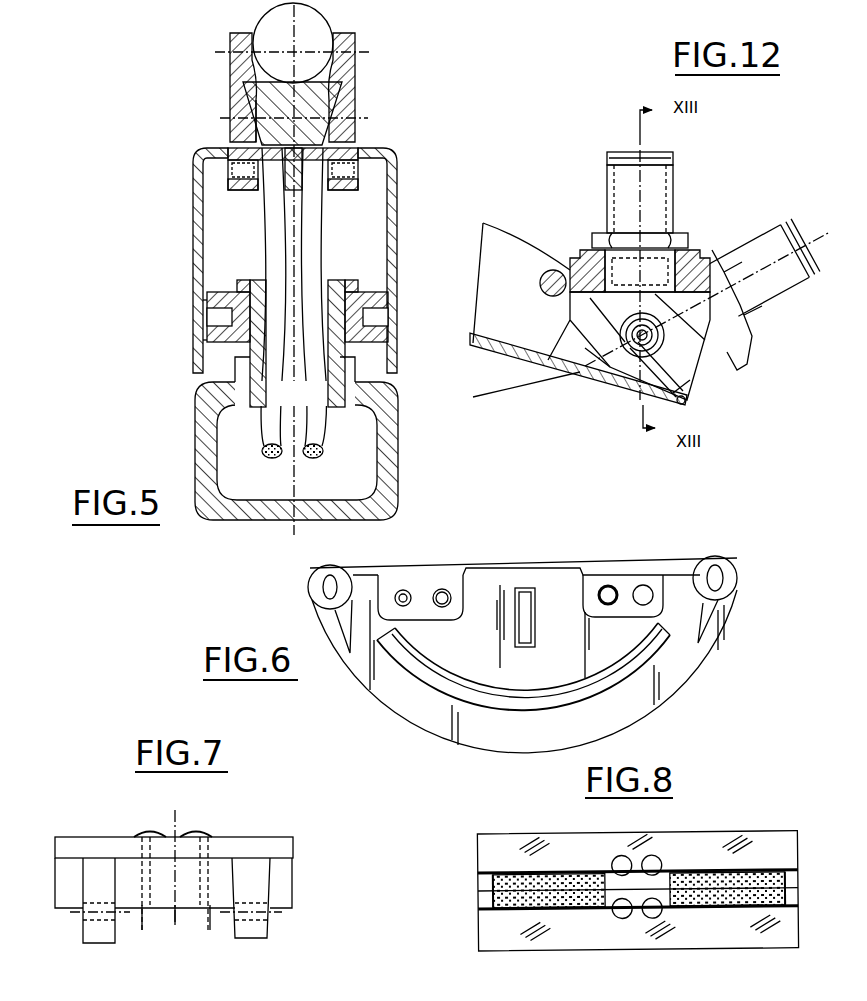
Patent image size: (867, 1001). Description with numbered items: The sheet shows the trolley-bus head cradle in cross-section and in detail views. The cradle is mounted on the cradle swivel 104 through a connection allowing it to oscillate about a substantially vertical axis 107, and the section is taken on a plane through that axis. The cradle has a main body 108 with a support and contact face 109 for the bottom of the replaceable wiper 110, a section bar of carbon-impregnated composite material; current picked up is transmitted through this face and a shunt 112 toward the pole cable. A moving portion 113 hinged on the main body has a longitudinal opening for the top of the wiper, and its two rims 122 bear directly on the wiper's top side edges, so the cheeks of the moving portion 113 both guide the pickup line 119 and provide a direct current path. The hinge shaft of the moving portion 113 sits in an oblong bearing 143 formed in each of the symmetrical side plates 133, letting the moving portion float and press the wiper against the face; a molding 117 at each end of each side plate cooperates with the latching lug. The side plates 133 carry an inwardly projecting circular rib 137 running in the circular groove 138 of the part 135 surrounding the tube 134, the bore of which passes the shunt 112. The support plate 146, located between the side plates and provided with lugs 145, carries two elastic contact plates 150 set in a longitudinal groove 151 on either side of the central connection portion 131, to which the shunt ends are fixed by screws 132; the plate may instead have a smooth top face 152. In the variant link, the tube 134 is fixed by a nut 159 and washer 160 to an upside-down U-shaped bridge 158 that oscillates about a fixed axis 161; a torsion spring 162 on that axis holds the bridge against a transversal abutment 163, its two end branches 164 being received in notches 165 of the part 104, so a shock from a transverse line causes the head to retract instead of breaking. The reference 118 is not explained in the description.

In FIG. 5, the cradle swivel 104 is at (393, 448).
In FIG. 12, the cradle swivel 104 is at (588, 388).
In FIG. 12, the substantially vertical axis 107 is at (643, 400).
In FIG. 6, the main body 108 is at (706, 542).
In FIG. 5, the support and contact face 109 is at (353, 135).
In FIG. 7, the support and contact face 109 is at (203, 832).
In FIG. 8, the support and contact face 109 is at (701, 866).
In FIG. 5, the replaceable wiper 110 is at (333, 102).
In FIG. 5, the shunt 112 is at (305, 460).
In FIG. 5, the moving portion 113 is at (362, 75).
In FIG. 6, the molding 117 is at (703, 628).
In FIG. 5, the gap 118 is at (247, 135).
In FIG. 5, the pickup line 119 is at (262, 27).
In FIG. 5, the rims 122 is at (245, 72).
In FIG. 5, the central connection portion 131 is at (243, 192).
In FIG. 7, the central connection portion 131 is at (163, 897).
In FIG. 5, the screws 132 is at (244, 168).
In FIG. 5, the side plates 133 is at (390, 220).
In FIG. 6, the side plates 133 is at (622, 708).
In FIG. 12, the tube 134 is at (673, 192).
In FIG. 5, the part surrounding the tube 135 is at (362, 340).
In FIG. 5, the circular rib 137 is at (222, 315).
In FIG. 6, the circular rib 137 is at (482, 698).
In FIG. 5, the circular groove 138 is at (380, 316).
In FIG. 6, the oblong bearing 143 is at (318, 583).
In FIG. 7, the lugs 145 is at (88, 928).
In FIG. 7, the plate 146 is at (300, 845).
In FIG. 8, the plate 146 is at (546, 830).
In FIG. 7, the plates 150 is at (150, 832).
In FIG. 8, the plates 150 is at (563, 909).
In FIG. 8, the longitudinal groove 151 is at (788, 909).
In FIG. 7, the smooth top face 152 is at (265, 832).
In FIG. 8, the smooth top face 152 is at (503, 940).
In FIG. 12, the U-shaped bridge 158 is at (588, 322).
In FIG. 12, the nut 159 is at (572, 262).
In FIG. 12, the washer 160 is at (592, 245).
In FIG. 12, the fixed axis 161 is at (632, 350).
In FIG. 12, the spring 162 is at (666, 340).
In FIG. 12, the transversal abutment 163 is at (548, 276).
In FIG. 12, the end branches 164 is at (673, 395).
In FIG. 12, the notches 165 is at (687, 408).